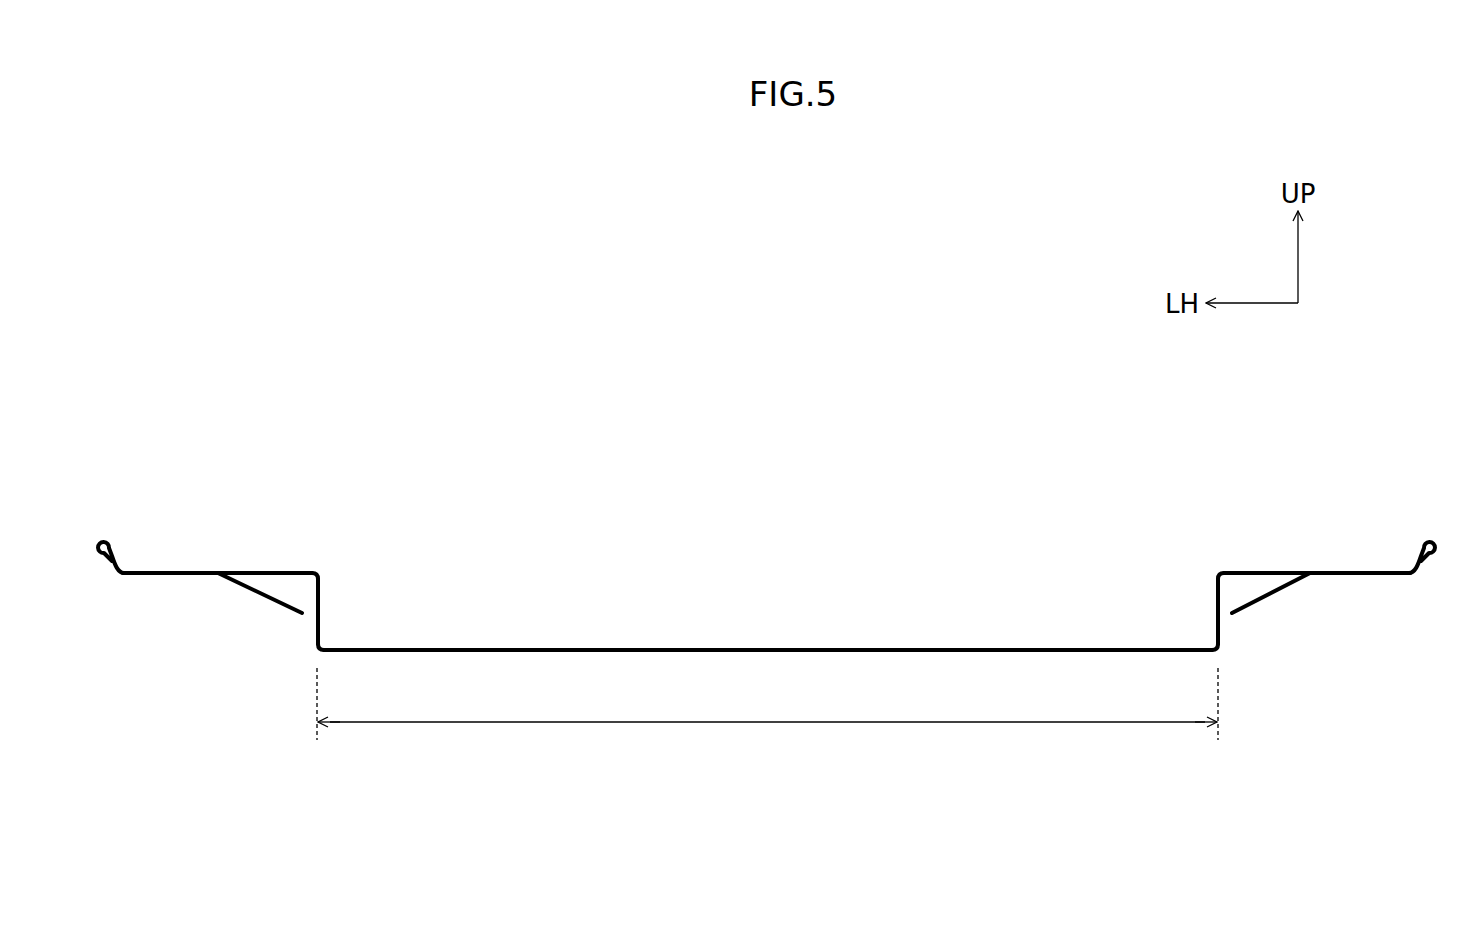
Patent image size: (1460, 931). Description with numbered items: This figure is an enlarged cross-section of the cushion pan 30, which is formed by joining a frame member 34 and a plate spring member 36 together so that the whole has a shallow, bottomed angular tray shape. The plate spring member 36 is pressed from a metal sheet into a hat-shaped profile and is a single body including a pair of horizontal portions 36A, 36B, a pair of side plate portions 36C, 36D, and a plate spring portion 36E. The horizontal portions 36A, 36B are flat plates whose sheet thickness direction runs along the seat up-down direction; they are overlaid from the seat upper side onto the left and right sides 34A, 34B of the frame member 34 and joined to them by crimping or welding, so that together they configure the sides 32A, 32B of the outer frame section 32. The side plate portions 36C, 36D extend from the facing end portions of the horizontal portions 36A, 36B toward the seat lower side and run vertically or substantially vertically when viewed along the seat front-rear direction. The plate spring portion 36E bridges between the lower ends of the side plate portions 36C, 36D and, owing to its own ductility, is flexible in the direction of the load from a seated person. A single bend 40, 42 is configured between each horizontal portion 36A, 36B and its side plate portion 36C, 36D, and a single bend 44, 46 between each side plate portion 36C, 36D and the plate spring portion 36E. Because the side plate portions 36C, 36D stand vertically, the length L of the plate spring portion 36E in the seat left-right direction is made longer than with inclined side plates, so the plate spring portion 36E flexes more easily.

The cushion pan 30 is at (765, 484).
The outer frame section 32 is at (1359, 594).
The side 32A is at (130, 475).
The side 32B is at (1252, 475).
The frame member 34 is at (1269, 601).
The side 34A is at (123, 571).
The side 34B is at (1410, 571).
The plate spring member 36 is at (850, 646).
The horizontal portion 36A is at (269, 572).
The horizontal portion 36B is at (1265, 572).
The side plate portion 36C is at (320, 608).
The side plate portion 36D is at (1217, 608).
The plate spring portion 36E is at (680, 647).
The bend 40 is at (318, 573).
The bend 42 is at (1217, 572).
The bend 44 is at (318, 650).
The bend 46 is at (1218, 650).
The length L is at (764, 723).